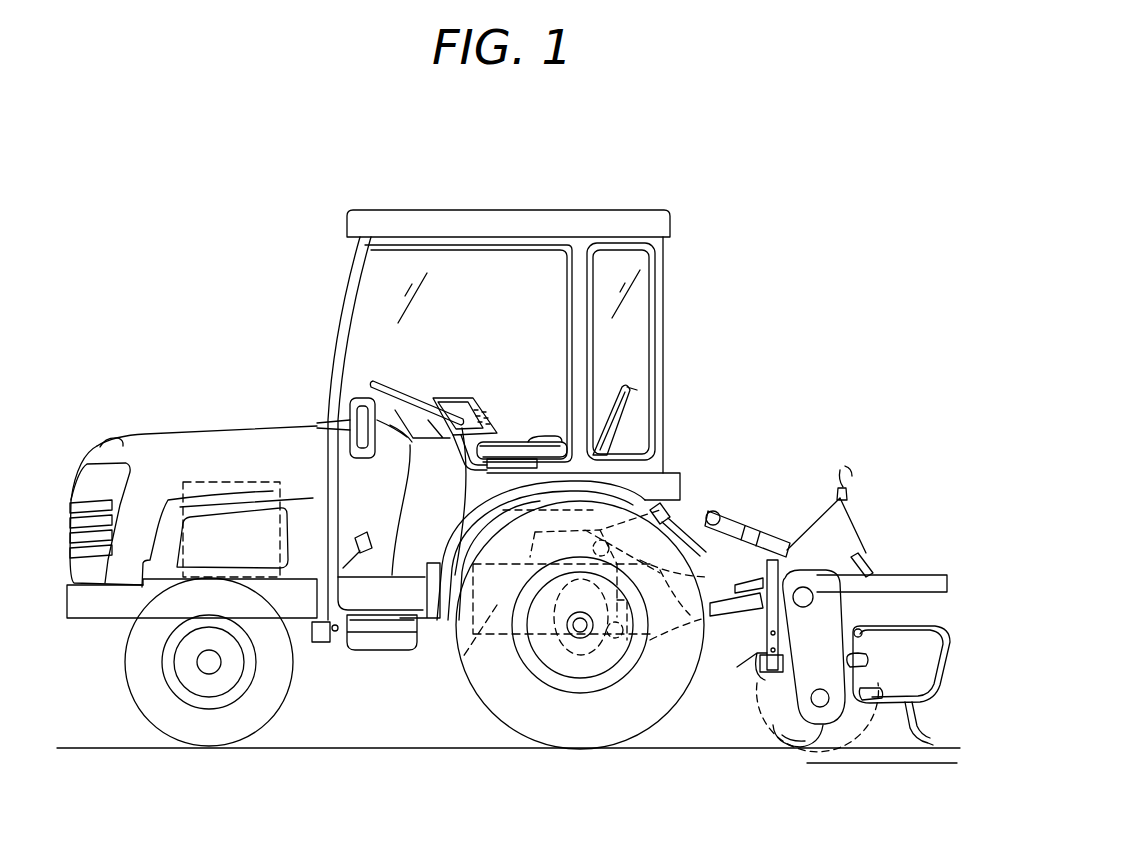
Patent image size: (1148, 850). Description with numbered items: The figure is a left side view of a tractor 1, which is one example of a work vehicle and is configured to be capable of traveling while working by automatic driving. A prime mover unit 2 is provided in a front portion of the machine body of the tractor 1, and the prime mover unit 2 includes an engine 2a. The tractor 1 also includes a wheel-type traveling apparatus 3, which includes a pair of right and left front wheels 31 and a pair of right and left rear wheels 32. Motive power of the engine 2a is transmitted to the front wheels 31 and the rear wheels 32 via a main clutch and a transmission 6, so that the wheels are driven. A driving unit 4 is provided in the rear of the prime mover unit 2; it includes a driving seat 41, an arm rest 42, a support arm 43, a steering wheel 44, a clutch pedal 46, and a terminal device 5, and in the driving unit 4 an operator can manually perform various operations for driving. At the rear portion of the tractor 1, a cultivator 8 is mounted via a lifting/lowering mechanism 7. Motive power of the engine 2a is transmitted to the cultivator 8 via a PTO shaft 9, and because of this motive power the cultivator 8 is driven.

The tractor 1 is at (146, 241).
The prime mover unit 2 is at (138, 414).
The engine 2a is at (230, 482).
The traveling apparatus 3 is at (373, 625).
The front wheels 31 is at (152, 705).
The rear wheels 32 is at (492, 716).
The driving unit 4 is at (346, 281).
The driving seat 41 is at (626, 385).
The arm rest 42 is at (541, 450).
The support arm 43 is at (466, 452).
The steering wheel 44 is at (410, 408).
The clutch pedal 46 is at (370, 573).
The terminal device 5 is at (485, 394).
The transmission 6 is at (472, 647).
The lifting/lowering mechanism 7 is at (740, 524).
The cultivator 8 is at (850, 527).
The PTO shaft 9 is at (683, 622).